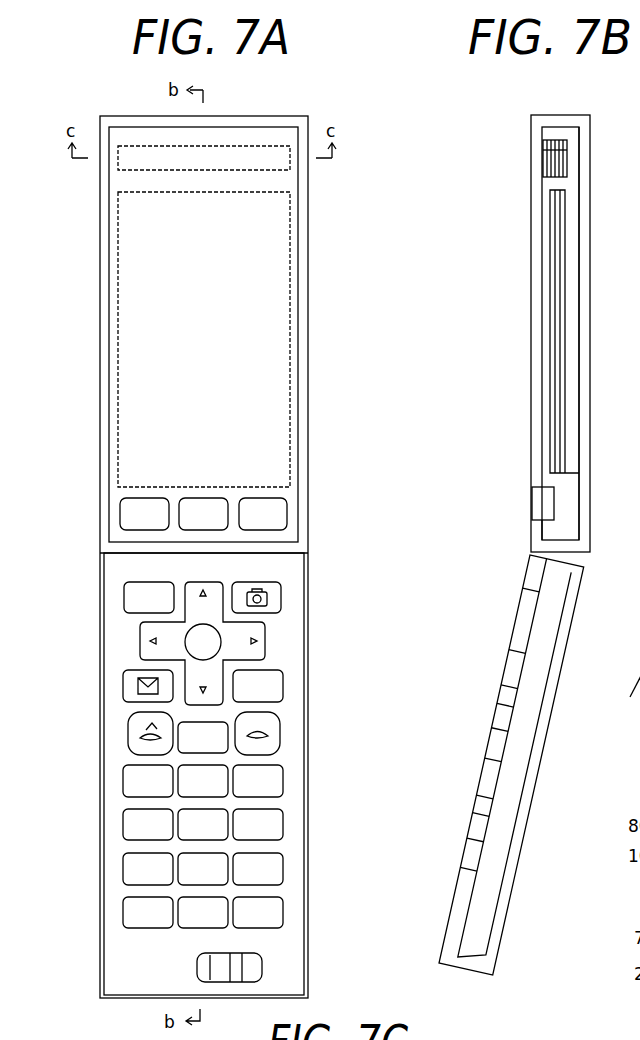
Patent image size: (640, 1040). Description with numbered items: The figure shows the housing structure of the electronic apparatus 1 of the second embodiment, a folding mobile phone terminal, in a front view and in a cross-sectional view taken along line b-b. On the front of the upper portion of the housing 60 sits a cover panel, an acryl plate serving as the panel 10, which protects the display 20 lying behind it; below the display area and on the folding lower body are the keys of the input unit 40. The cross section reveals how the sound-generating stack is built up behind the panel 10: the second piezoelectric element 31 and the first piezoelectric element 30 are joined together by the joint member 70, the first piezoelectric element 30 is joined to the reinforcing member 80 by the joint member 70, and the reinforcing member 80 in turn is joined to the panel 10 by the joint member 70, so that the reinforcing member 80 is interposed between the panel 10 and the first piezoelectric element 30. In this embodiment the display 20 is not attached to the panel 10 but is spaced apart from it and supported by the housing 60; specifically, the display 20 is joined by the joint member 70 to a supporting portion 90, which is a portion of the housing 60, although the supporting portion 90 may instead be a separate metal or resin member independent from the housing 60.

In FIG. 7A, the electronic apparatus 1 is at (163, 101).
In FIG. 7A, the panel 10 is at (222, 127).
In FIG. 7B, the panel 10 is at (531, 192).
In FIG. 7A, the display 20 is at (288, 276).
In FIG. 7B, the display 20 is at (553, 307).
In FIG. 7A, the first piezoelectric element 30 is at (288, 170).
In FIG. 7B, the first piezoelectric element 30 is at (570, 142).
In FIG. 7B, the second piezoelectric element 31 is at (566, 162).
In FIG. 7A, the input unit 40 is at (269, 513).
In FIG. 7B, the input unit 40 is at (538, 503).
In FIG. 7A, the housing 60 is at (100, 250).
In FIG. 7B, the housing 60 is at (584, 183).
In FIG. 7B, the joint member 70 is at (561, 140).
In FIG. 7B, the reinforcing member 80 is at (543, 147).
In FIG. 7B, the supporting portion 90 is at (575, 240).